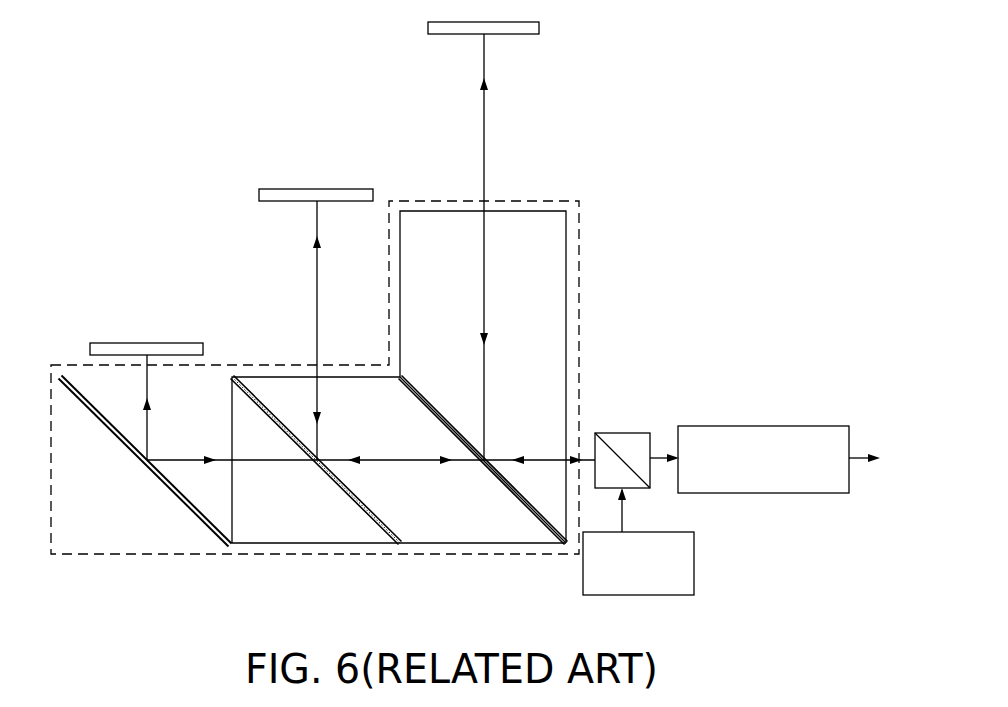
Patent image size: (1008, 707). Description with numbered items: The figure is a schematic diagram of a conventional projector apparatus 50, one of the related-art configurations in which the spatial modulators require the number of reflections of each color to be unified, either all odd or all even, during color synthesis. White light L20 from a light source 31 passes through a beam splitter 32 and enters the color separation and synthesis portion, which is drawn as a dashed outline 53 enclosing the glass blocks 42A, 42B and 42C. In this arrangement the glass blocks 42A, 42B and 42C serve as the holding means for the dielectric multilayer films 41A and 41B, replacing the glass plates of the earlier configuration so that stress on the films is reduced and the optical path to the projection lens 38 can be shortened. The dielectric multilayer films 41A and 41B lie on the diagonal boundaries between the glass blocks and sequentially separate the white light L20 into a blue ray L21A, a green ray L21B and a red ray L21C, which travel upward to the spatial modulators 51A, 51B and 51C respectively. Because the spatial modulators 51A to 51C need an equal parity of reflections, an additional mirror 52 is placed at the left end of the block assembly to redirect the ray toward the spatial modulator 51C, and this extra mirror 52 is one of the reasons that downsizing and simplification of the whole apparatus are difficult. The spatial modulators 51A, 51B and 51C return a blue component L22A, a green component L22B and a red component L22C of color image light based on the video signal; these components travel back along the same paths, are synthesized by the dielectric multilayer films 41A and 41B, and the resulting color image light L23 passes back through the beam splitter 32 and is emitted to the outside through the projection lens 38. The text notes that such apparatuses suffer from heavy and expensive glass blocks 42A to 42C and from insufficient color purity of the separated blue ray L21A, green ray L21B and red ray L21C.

The projector apparatus 50 is at (818, 614).
The light source 31 is at (694, 548).
The beam splitter 32 is at (637, 432).
The projection lens 38 is at (751, 425).
The dielectric multilayer film 41A is at (546, 541).
The dielectric multilayer film 41B is at (384, 541).
The glass block 42A is at (559, 291).
The glass block 42B is at (479, 536).
The glass block 42C is at (328, 541).
The spatial modulator 51A is at (540, 31).
The spatial modulator 51B is at (323, 186).
The spatial modulator 51C is at (108, 342).
The additional mirror 52 is at (118, 441).
The color separation/combination prism block 53 is at (581, 212).
The white light L20 is at (515, 440).
The blue ray L21A is at (555, 247).
The blue component L22A is at (486, 175).
The green ray L21B is at (250, 330).
The green component L22B is at (316, 275).
The red ray L21C is at (228, 387).
The red component L22C is at (147, 389).
The color image light L23 is at (585, 455).